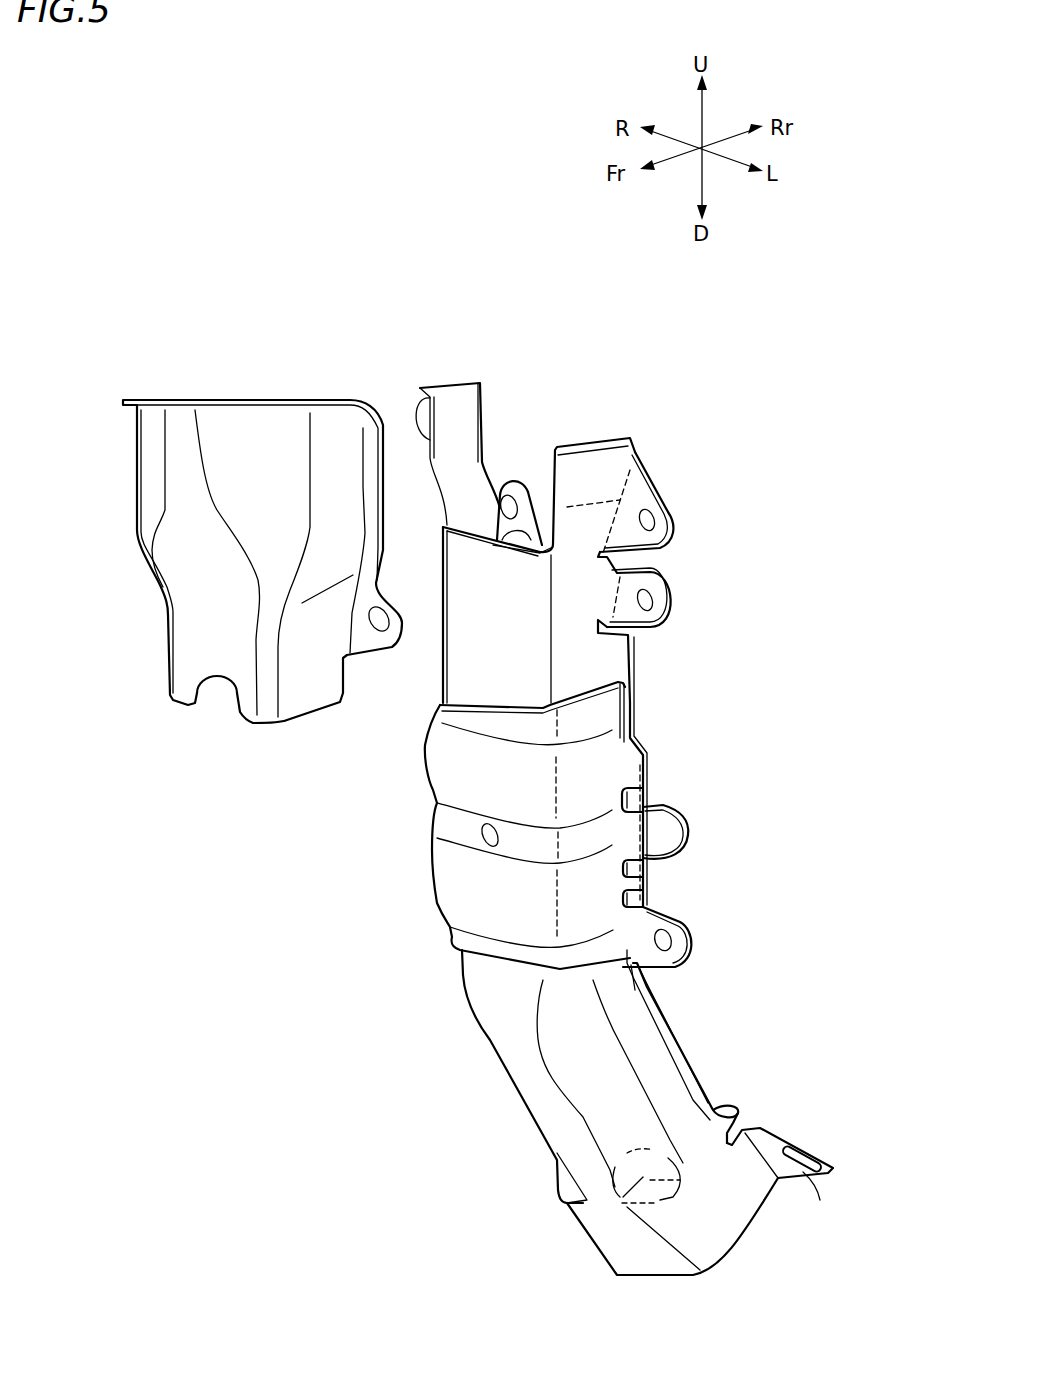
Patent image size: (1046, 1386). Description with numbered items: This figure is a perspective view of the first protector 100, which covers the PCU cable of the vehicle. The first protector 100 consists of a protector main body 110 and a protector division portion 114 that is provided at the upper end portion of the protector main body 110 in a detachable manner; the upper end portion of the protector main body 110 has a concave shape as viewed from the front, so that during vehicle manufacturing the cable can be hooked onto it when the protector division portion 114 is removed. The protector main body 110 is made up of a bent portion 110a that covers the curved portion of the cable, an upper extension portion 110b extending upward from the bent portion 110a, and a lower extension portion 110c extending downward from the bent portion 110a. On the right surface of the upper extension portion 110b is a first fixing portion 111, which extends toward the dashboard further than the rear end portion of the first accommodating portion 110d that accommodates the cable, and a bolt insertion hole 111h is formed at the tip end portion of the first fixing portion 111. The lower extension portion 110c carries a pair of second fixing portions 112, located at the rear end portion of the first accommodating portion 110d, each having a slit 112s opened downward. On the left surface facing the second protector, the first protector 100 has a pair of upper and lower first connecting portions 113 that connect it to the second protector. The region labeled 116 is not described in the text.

The first protector 100 is at (680, 352).
The protector main body 110 is at (632, 701).
The bent portion 110a is at (443, 1012).
The upper extension portion 110b is at (657, 470).
The lower extension portion 110c is at (699, 1054).
The first accommodating portion 110d is at (531, 550).
The first fixing portion 111 is at (500, 470).
The bolt insertion hole 111h is at (520, 495).
The second fixing portion 112 is at (818, 1132).
The slit 112s is at (805, 1172).
The first connecting portion 113 is at (660, 582).
The protector division portion 114 is at (168, 578).
The bulged portion 116 is at (428, 873).